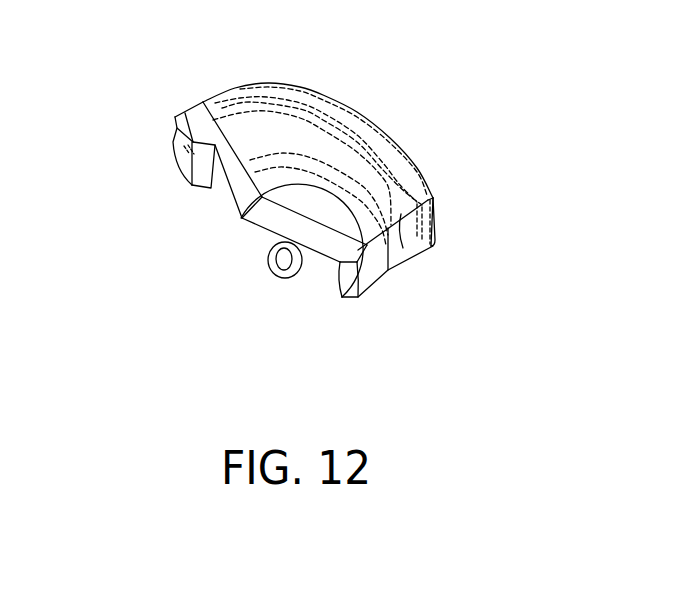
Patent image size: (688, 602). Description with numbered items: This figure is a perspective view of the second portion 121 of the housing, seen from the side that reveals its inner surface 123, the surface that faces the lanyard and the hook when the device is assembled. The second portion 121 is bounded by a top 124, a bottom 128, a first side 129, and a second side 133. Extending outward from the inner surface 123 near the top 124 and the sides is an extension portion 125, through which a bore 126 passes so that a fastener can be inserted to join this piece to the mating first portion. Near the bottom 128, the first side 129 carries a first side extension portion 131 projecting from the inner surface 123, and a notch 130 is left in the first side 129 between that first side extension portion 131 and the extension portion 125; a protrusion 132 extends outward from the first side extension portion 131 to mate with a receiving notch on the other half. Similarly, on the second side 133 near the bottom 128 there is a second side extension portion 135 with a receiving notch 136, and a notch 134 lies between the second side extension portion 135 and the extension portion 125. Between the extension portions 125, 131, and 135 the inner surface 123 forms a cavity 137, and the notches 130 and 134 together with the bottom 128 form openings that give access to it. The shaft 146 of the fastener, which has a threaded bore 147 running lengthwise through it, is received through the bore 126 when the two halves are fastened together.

The second portion 121 is at (449, 93).
The inner surface 123 is at (393, 167).
The top 124 is at (302, 337).
The extension portion 125 is at (322, 288).
The bore 126 is at (283, 298).
The bottom 128 is at (342, 79).
The first side 129 is at (461, 245).
The notch 130 is at (365, 295).
The first side extension portion 131 is at (400, 257).
The protrusion 132 is at (395, 243).
The second side 133 is at (163, 116).
The notch 134 is at (200, 204).
The second side extension portion 135 is at (181, 178).
The receiving notch 136 is at (176, 148).
The cavity 137 is at (263, 144).
The shaft 146 is at (276, 246).
The threaded bore 147 is at (270, 273).